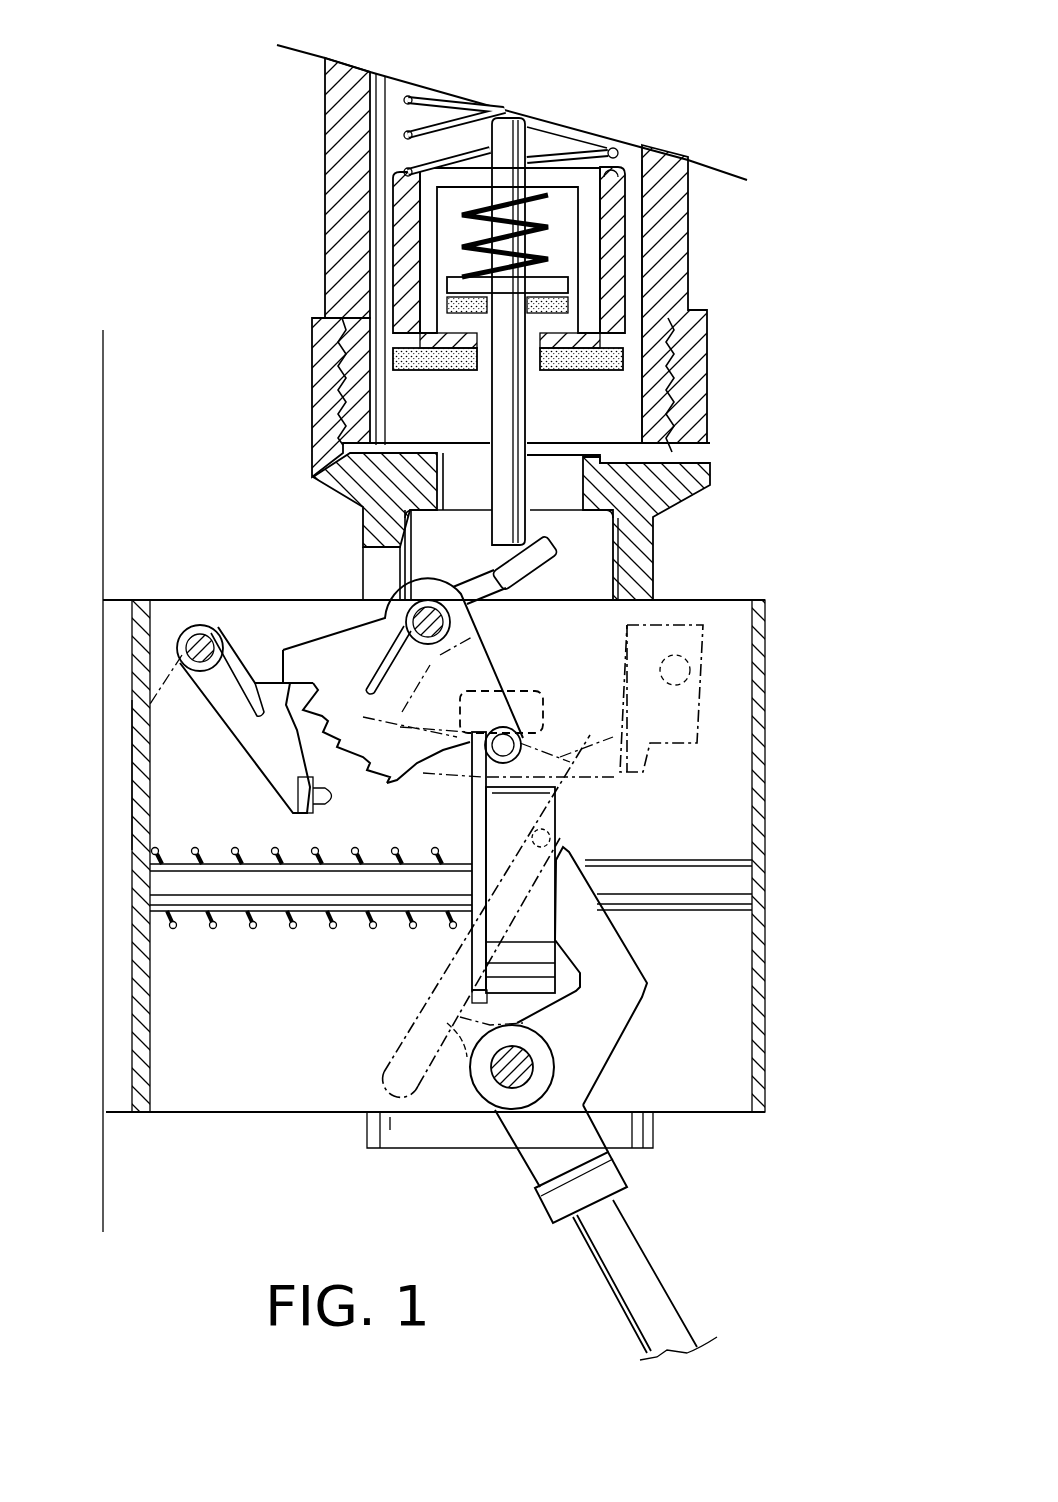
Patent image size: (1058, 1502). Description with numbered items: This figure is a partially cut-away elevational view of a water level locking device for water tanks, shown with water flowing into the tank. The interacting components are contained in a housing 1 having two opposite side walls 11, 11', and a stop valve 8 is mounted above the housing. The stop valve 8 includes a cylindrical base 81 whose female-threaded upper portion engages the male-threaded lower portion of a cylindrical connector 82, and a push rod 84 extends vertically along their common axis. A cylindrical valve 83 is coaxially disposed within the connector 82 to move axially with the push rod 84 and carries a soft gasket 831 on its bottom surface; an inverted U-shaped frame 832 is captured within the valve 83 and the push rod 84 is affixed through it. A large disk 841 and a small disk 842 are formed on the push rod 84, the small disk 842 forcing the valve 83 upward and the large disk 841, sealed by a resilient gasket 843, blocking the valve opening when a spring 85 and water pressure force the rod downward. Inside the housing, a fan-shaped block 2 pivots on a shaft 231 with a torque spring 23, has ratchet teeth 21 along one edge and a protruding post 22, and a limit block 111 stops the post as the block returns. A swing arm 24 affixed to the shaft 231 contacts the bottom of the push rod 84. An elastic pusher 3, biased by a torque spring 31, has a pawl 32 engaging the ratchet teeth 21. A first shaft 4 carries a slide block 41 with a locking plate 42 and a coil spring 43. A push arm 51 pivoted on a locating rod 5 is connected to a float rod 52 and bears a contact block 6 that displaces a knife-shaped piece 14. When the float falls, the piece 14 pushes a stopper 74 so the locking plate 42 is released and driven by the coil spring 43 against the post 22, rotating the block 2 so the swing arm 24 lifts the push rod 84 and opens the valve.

The housing 1 is at (790, 857).
The side wall 11 is at (472, 874).
The side wall 11' is at (100, 775).
The limit block 111 is at (540, 703).
The knife-shaped piece 14 is at (437, 988).
The fan-shaped block 2 is at (343, 660).
The ratchet teeth 21 is at (333, 737).
The protruding post 22 is at (522, 745).
The torque spring 23 is at (450, 678).
The shaft 231 is at (450, 622).
The swing arm 24 is at (513, 575).
The elastic pusher 3 is at (253, 743).
The torque spring 31 is at (212, 627).
The pawl 32 is at (283, 683).
The first shaft 4 is at (697, 892).
The slide block 41 is at (545, 887).
The locking plate 42 is at (470, 812).
The coil spring 43 is at (297, 930).
The locating rod 5 is at (508, 1078).
The push arm 51 is at (600, 1030).
The float rod 52 is at (637, 1253).
The contact block 6 is at (462, 1040).
The stopper 74 is at (693, 643).
The stop valve 8 is at (830, 293).
The cylindrical base 81 is at (343, 493).
The cylindrical connector 82 is at (332, 97).
The cylindrical valve 83 is at (613, 293).
The soft gasket 831 is at (630, 358).
The inverted U-shaped frame 832 is at (613, 153).
The push rod 84 is at (503, 127).
The large disk 841 is at (455, 290).
The small disk 842 is at (493, 223).
The resilient gasket 843 is at (450, 307).
The spring 85 is at (580, 227).